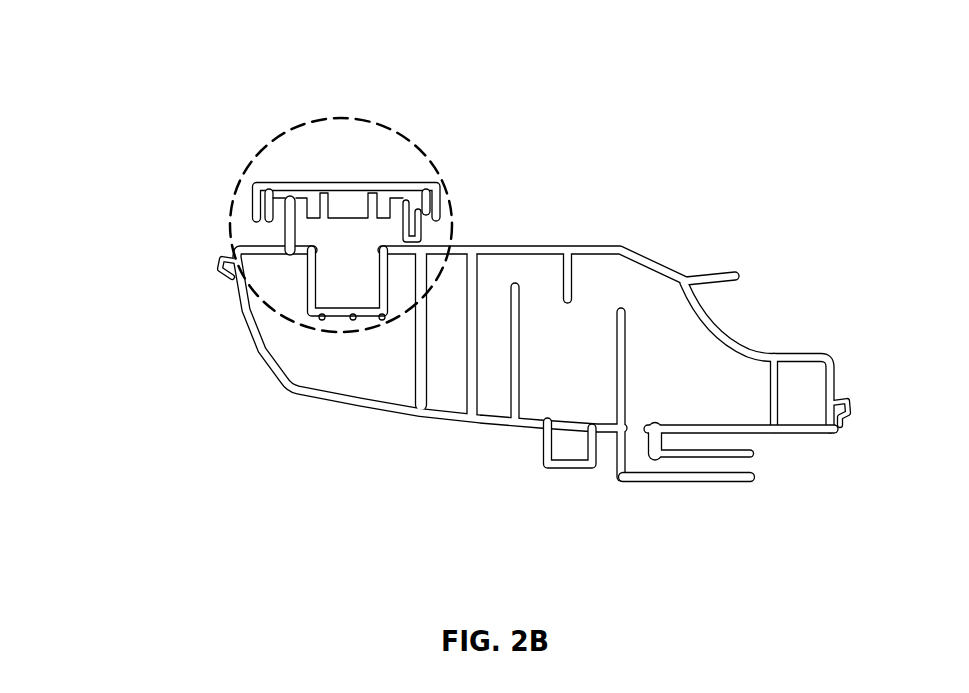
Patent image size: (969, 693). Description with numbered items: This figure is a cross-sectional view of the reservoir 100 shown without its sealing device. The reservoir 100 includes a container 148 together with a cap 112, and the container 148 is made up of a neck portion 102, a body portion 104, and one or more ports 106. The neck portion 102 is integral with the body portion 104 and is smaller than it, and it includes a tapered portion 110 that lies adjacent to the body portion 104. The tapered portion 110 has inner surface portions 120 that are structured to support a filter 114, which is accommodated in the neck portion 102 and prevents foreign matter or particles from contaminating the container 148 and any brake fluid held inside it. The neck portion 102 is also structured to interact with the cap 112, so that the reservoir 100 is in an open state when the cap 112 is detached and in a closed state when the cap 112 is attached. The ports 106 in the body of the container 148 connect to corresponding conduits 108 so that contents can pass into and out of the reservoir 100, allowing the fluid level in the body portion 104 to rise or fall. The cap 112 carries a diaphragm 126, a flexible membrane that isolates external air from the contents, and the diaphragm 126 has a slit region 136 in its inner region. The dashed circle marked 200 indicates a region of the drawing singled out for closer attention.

The reservoir 100 is at (718, 154).
The neck portion 102 is at (206, 204).
The body portion 104 is at (205, 257).
The ports 106 is at (637, 426).
The conduits 108 is at (697, 463).
The tapered portion 110 is at (420, 224).
The cap 112 is at (268, 190).
The filter 114 is at (310, 288).
The inner surface portions 120 is at (293, 226).
The diaphragm 126 is at (390, 220).
The slit region 136 is at (345, 236).
The container 148 is at (142, 193).
The detail region 200 is at (368, 148).